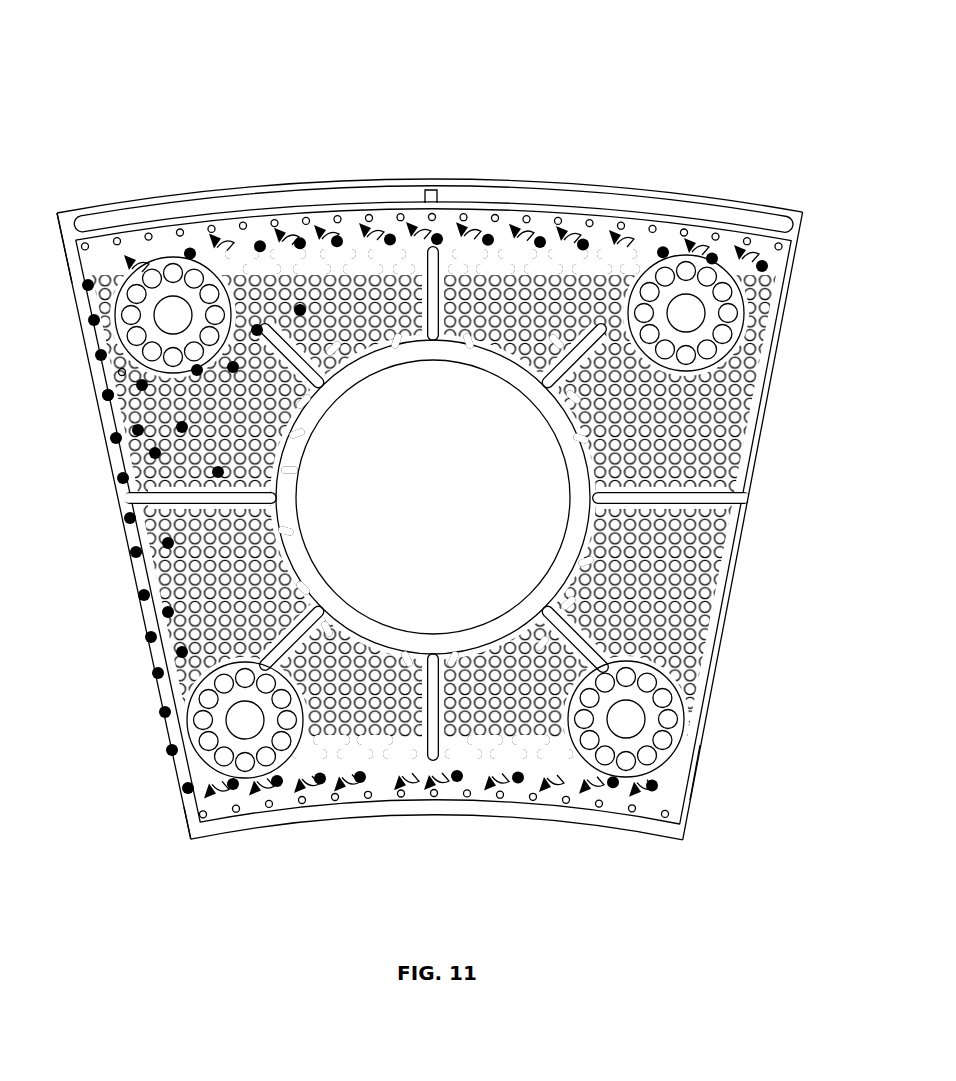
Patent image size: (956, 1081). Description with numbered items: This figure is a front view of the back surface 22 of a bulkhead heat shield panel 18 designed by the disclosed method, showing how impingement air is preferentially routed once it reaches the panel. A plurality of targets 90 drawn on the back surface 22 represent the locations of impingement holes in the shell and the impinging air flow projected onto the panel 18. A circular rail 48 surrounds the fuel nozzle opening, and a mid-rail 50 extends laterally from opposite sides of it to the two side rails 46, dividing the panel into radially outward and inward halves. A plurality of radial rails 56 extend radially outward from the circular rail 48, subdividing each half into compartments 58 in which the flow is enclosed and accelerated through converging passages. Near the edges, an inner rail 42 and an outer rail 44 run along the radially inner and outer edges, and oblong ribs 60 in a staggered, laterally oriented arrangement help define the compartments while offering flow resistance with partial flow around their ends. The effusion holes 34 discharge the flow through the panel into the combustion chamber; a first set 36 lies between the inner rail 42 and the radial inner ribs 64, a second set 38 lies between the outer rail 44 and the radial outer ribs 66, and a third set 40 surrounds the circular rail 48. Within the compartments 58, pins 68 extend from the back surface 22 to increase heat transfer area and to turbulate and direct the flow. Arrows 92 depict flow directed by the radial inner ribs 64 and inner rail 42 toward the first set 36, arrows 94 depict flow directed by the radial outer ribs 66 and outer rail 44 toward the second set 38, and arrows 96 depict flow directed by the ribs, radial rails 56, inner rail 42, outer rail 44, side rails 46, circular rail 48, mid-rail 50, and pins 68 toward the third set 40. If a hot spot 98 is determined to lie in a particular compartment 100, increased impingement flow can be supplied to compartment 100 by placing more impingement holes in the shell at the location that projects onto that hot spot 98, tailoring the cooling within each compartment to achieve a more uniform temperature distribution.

The panel 18 is at (226, 116).
The back surface 22 is at (457, 212).
The effusion holes 34 is at (118, 236).
The first set of effusion holes 36 is at (189, 822).
The second set of effusion holes 38 is at (62, 261).
The third set of effusion holes 40 is at (290, 440).
The inner rail 42 is at (356, 818).
The outer rail 44 is at (372, 198).
The side rails 46 is at (182, 770).
The circular rail 48 is at (398, 355).
The mid-rail 50 is at (128, 504).
The radial rails 56 is at (264, 328).
The compartments 58 is at (338, 285).
The ribs 60 is at (292, 253).
The radial inner ribs 64 is at (590, 740).
The radial outer ribs 66 is at (650, 292).
The pins 68 is at (132, 490).
The targets 90 is at (262, 242).
The arrows 92 is at (335, 803).
The arrows 94 is at (160, 236).
The arrows 96 is at (142, 558).
The hot spot 98 is at (120, 372).
The compartment 100 is at (108, 410).